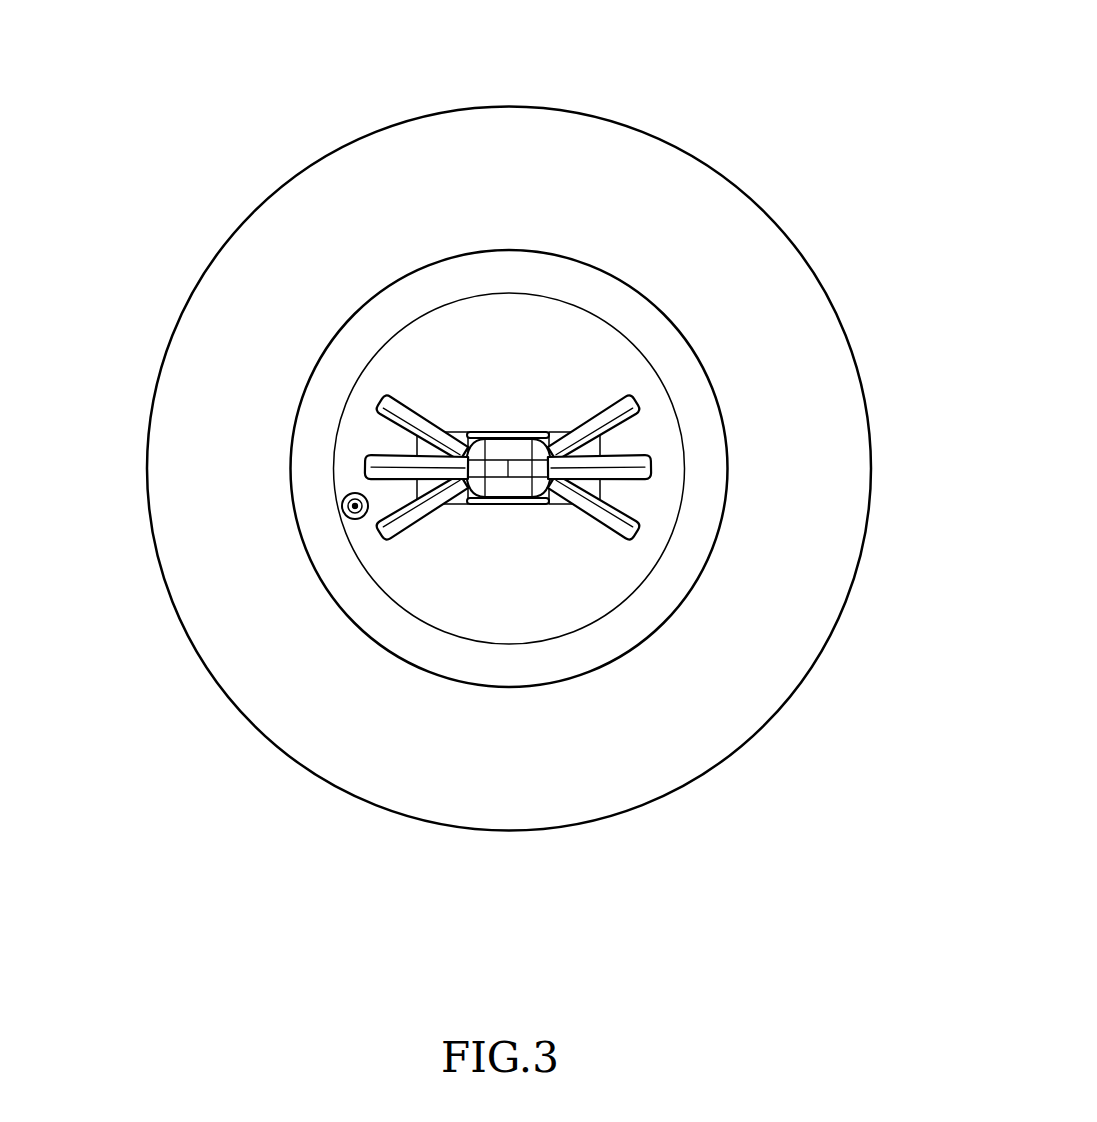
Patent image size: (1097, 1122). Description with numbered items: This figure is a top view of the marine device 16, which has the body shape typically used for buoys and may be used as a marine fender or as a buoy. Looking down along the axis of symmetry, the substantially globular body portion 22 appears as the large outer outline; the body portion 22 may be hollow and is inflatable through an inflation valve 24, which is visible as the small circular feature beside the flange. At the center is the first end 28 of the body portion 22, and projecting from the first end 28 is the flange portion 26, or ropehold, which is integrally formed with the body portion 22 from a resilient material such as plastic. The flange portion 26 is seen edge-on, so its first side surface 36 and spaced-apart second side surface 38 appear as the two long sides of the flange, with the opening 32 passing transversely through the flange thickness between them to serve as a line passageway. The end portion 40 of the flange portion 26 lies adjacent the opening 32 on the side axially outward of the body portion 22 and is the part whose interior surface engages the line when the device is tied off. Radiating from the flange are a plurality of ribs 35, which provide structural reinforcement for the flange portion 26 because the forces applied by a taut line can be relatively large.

The marine device 16 is at (497, 450).
The body portion 22 is at (755, 732).
The inflation valve 24 is at (353, 519).
The flange portion 26 is at (384, 456).
The first end 28 is at (725, 374).
The opening 32 is at (503, 505).
The ribs 35 is at (364, 469).
The first side surface 36 is at (462, 503).
The second side surface 38 is at (377, 288).
The end portion 40 is at (530, 264).